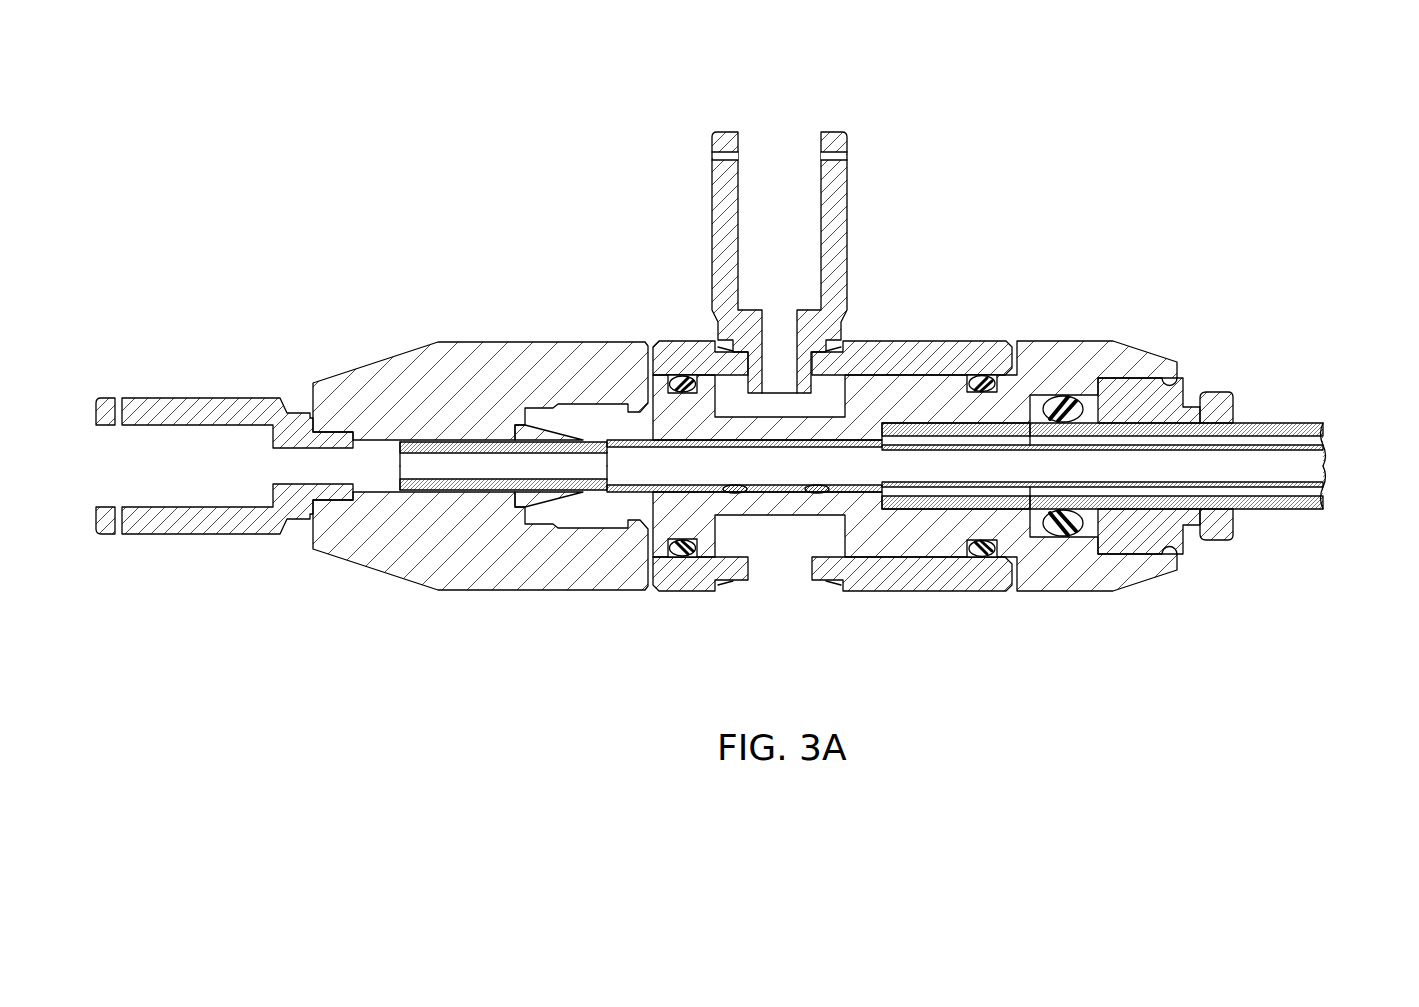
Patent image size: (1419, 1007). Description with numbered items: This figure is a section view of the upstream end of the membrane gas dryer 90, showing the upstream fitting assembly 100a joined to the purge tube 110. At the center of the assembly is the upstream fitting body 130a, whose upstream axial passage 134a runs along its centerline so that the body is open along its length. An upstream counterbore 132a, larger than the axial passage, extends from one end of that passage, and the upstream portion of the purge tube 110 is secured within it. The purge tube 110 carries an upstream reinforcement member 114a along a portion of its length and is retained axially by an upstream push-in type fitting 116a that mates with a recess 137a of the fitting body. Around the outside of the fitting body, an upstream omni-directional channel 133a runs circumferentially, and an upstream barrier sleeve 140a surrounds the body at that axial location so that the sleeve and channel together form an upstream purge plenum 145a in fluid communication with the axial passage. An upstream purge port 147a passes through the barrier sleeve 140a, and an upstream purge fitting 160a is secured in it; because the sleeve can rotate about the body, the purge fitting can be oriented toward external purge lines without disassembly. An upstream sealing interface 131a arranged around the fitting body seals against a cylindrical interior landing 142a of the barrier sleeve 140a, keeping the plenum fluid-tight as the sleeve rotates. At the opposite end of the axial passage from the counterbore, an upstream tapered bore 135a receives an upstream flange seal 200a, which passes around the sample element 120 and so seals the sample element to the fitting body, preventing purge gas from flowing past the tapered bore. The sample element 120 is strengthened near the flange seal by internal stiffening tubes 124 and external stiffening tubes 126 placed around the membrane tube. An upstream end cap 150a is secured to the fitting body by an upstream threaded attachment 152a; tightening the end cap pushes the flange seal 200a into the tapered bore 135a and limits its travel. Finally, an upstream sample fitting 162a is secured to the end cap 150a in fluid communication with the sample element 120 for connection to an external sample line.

The membrane gas dryer 90 is at (1278, 160).
The upstream fitting assembly 100a is at (1116, 178).
The purge tube 110 is at (1286, 523).
The upstream reinforcement member 114a is at (953, 435).
The upstream push-in type fitting 116a is at (1217, 540).
The sample element 120 is at (1336, 436).
The internal stiffening tubes 124 is at (432, 476).
The external stiffening tubes 126 is at (418, 493).
The upstream fitting body 130a is at (1077, 606).
The upstream sealing interface 131a is at (982, 566).
The upstream counterbore 132a is at (1015, 423).
The upstream omni-directional channel 133a is at (795, 545).
The upstream axial passage 134a is at (770, 493).
The upstream tapered bore 135a is at (573, 442).
The recess 137a is at (1172, 386).
The upstream barrier sleeve 140a is at (836, 606).
The cylindrical interior landing 142a is at (837, 543).
The upstream purge plenum 145a is at (728, 543).
The upstream purge port 147a is at (813, 363).
The upstream end cap 150a is at (500, 606).
The upstream threaded attachment 152a is at (608, 402).
The upstream purge fitting 160a is at (712, 209).
The upstream sample fitting 162a is at (212, 398).
The upstream flange seal 200a is at (514, 422).